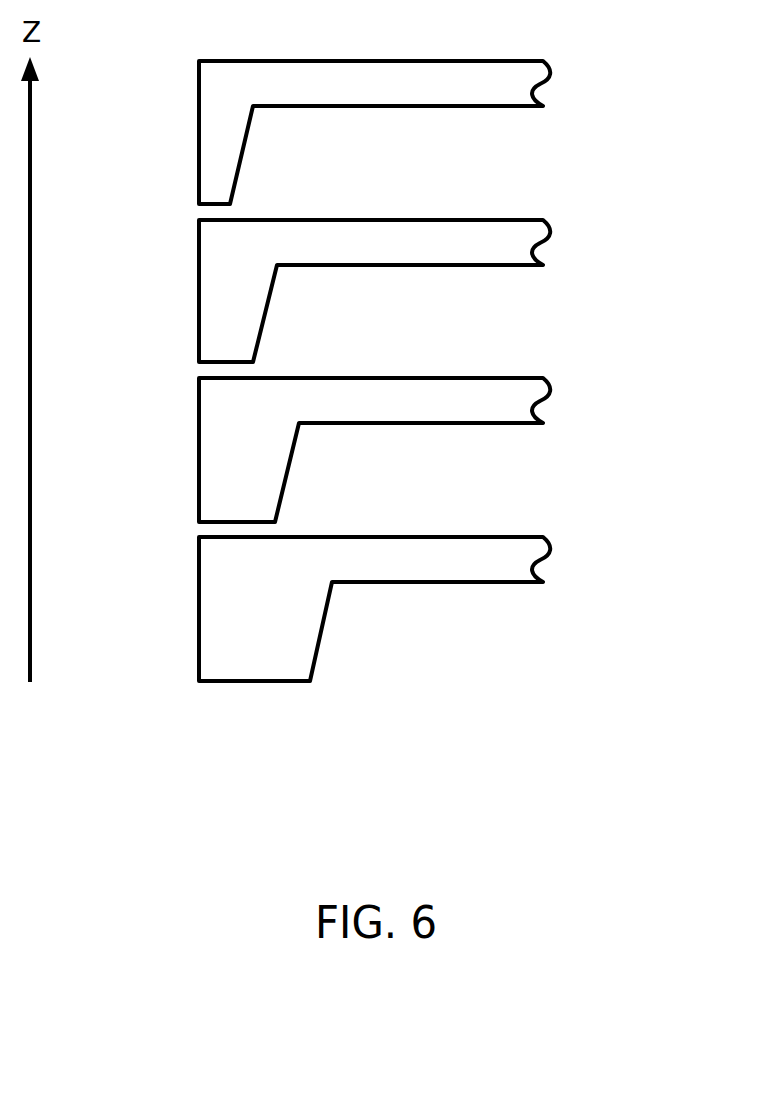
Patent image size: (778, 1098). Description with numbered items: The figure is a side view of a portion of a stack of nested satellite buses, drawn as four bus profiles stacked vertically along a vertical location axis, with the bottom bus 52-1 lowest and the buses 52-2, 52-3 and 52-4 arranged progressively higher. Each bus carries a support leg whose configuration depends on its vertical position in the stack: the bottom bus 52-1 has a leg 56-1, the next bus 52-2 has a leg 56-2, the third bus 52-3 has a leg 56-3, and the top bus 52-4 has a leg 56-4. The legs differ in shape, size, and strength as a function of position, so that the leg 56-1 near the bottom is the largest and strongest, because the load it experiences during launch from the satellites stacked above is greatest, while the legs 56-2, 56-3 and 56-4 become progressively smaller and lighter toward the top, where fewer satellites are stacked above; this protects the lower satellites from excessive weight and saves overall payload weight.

The bus 52-1 is at (397, 607).
The bus 52-2 is at (397, 448).
The bus 52-3 is at (397, 289).
The bus 52-4 is at (397, 131).
The leg 56-1 is at (199, 647).
The leg 56-2 is at (199, 483).
The leg 56-3 is at (199, 316).
The leg 56-4 is at (199, 152).